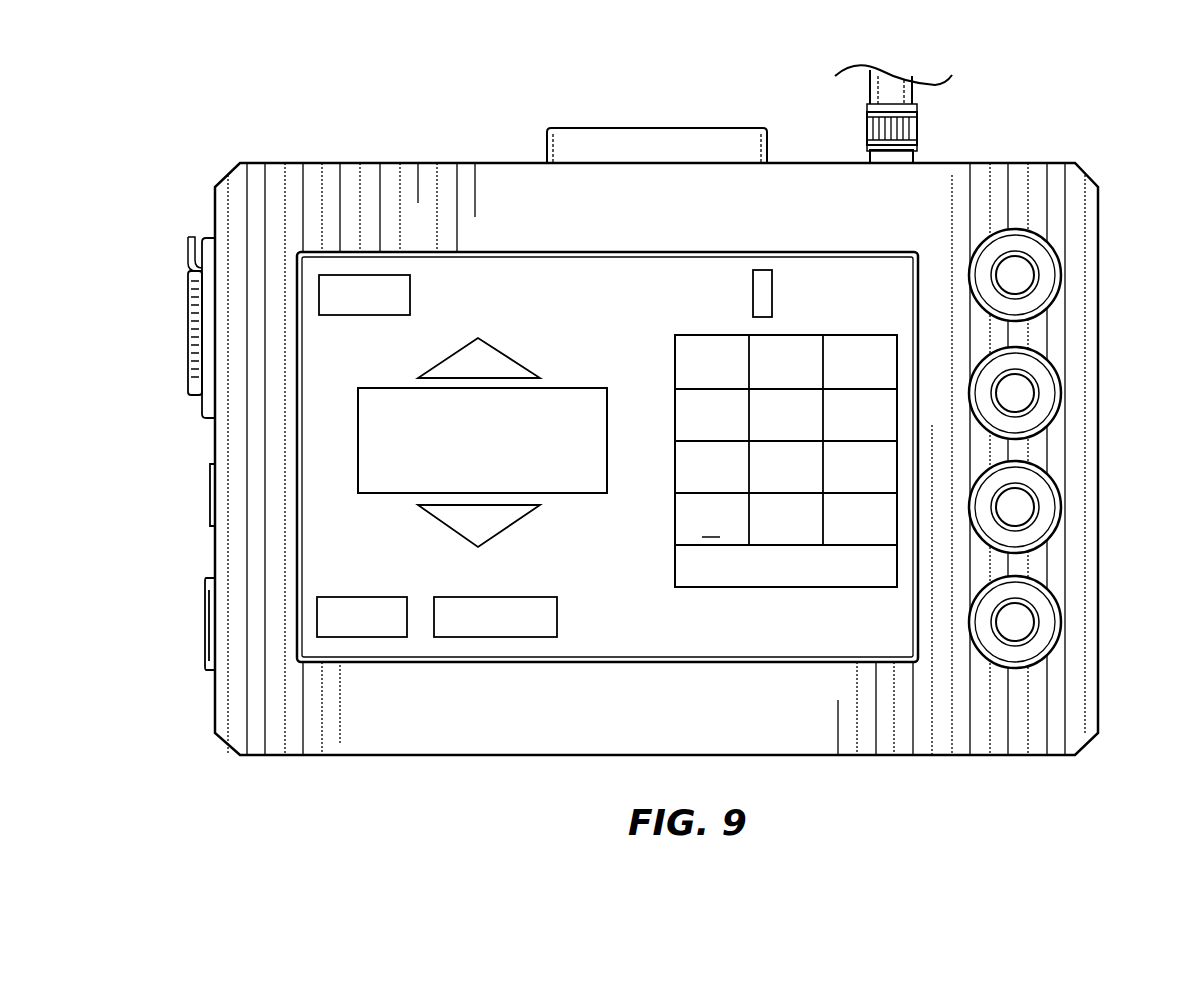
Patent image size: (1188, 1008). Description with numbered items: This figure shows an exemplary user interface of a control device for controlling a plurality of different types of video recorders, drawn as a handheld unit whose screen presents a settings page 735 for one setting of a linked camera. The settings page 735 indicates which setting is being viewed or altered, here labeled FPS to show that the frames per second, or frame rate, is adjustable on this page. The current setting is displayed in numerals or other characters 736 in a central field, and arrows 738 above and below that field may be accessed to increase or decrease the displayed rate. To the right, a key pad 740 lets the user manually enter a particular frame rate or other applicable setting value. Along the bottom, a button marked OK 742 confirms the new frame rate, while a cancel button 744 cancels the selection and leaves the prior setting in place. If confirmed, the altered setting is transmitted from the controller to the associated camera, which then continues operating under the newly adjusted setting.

The settings page 735 is at (298, 414).
The numerals or other characters 736 is at (375, 496).
The arrows 738 is at (488, 377).
The key pad 740 is at (830, 335).
The OK button 742 is at (337, 628).
The cancel button 744 is at (442, 622).